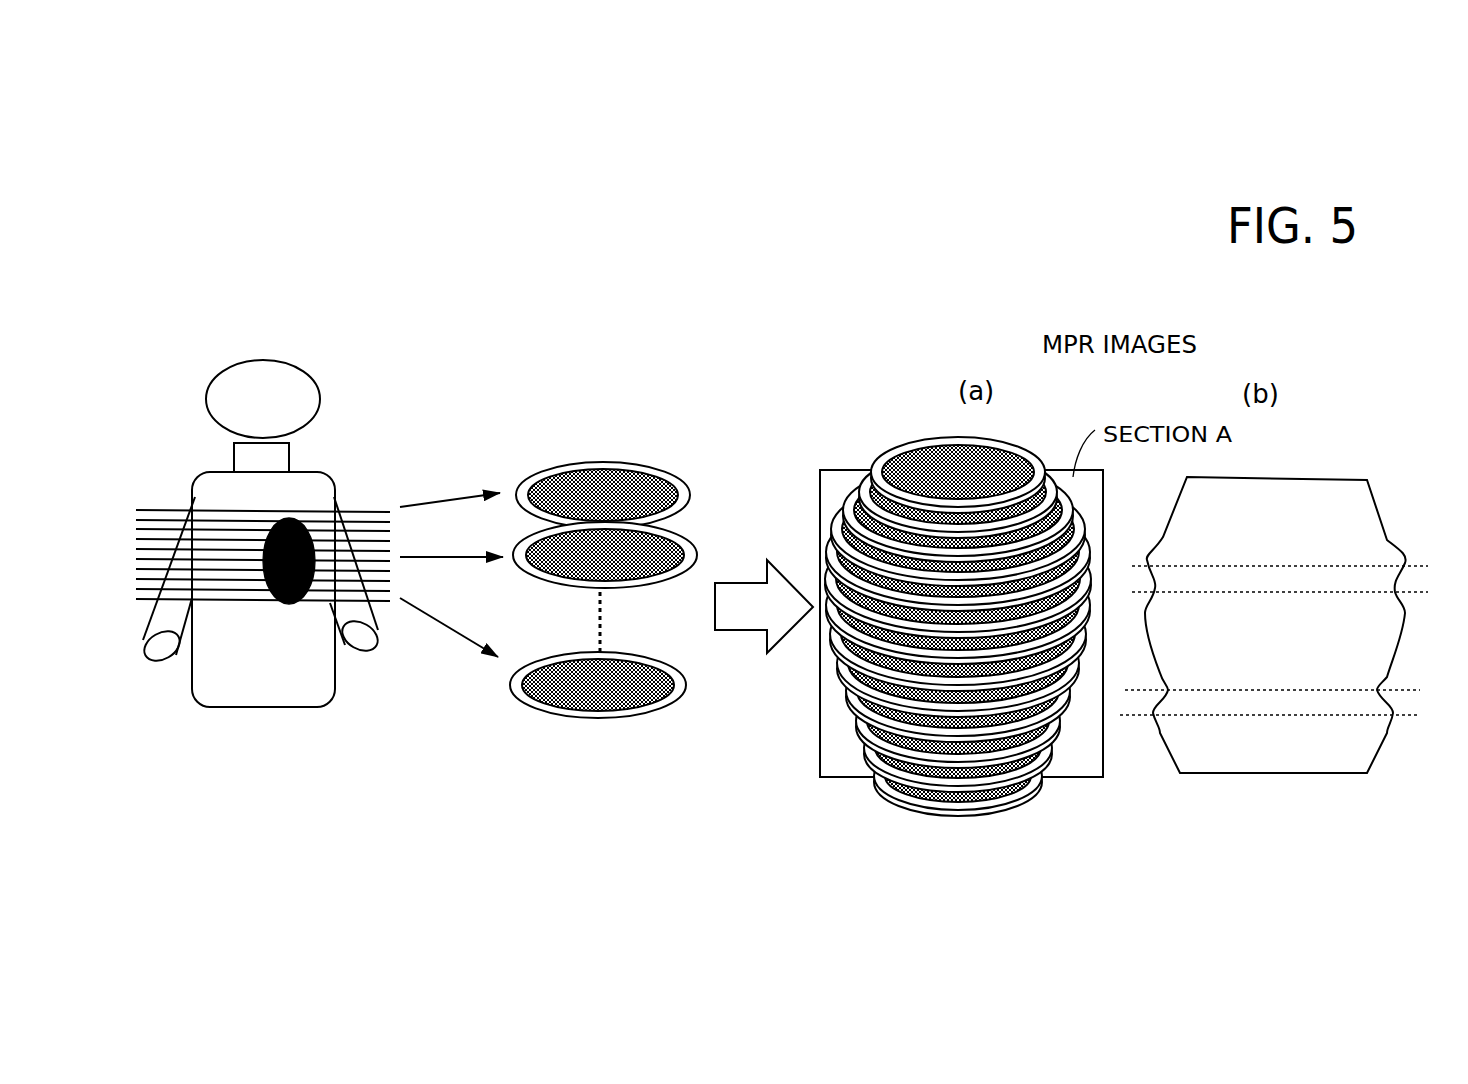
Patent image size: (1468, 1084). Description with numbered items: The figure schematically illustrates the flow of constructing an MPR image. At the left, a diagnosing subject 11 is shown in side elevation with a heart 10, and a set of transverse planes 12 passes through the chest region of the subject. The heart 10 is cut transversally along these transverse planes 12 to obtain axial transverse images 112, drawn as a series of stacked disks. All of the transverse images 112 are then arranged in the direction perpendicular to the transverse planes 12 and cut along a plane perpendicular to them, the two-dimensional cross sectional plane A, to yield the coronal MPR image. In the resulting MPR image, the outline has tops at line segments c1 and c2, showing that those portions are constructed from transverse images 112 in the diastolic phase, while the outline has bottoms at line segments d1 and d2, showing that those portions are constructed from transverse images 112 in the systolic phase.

The heart 10 is at (295, 603).
The diagnosing subject 11 is at (298, 377).
The transverse planes 12 is at (340, 517).
The transverse images 112 is at (578, 468).
The line segment c1 is at (1412, 570).
The line segment d1 is at (1412, 595).
The line segment d2 is at (1412, 693).
The line segment c2 is at (1408, 718).